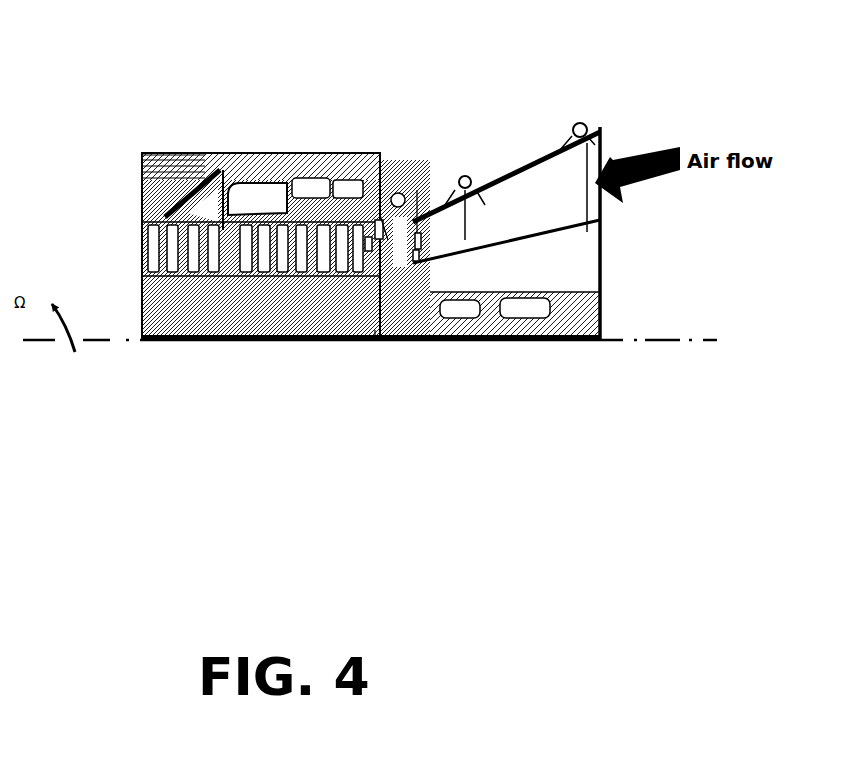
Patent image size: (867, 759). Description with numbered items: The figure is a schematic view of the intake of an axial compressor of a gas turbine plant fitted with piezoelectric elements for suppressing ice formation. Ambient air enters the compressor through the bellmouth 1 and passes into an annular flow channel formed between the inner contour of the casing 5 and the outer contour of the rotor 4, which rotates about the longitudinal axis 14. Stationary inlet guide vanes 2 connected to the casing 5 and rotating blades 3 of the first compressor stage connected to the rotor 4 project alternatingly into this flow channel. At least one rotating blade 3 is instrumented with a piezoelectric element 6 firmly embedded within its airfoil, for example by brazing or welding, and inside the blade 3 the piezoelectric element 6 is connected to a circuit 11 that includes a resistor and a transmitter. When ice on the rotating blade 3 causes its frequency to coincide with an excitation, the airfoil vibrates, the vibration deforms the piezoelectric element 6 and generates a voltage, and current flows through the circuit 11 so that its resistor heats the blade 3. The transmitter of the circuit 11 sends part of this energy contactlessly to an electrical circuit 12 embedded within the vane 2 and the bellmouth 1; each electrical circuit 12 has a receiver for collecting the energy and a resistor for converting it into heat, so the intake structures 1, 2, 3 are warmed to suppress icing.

The bellmouth 1 is at (513, 215).
The inlet guide vanes 2 is at (417, 233).
The rotating blades 3 is at (375, 340).
The rotor 4 is at (371, 246).
The casing 5 is at (376, 205).
The piezoelectric element 6 is at (371, 255).
The circuit 11 is at (424, 239).
The electrical circuit 12 is at (376, 223).
The longitudinal axis 14 is at (656, 346).